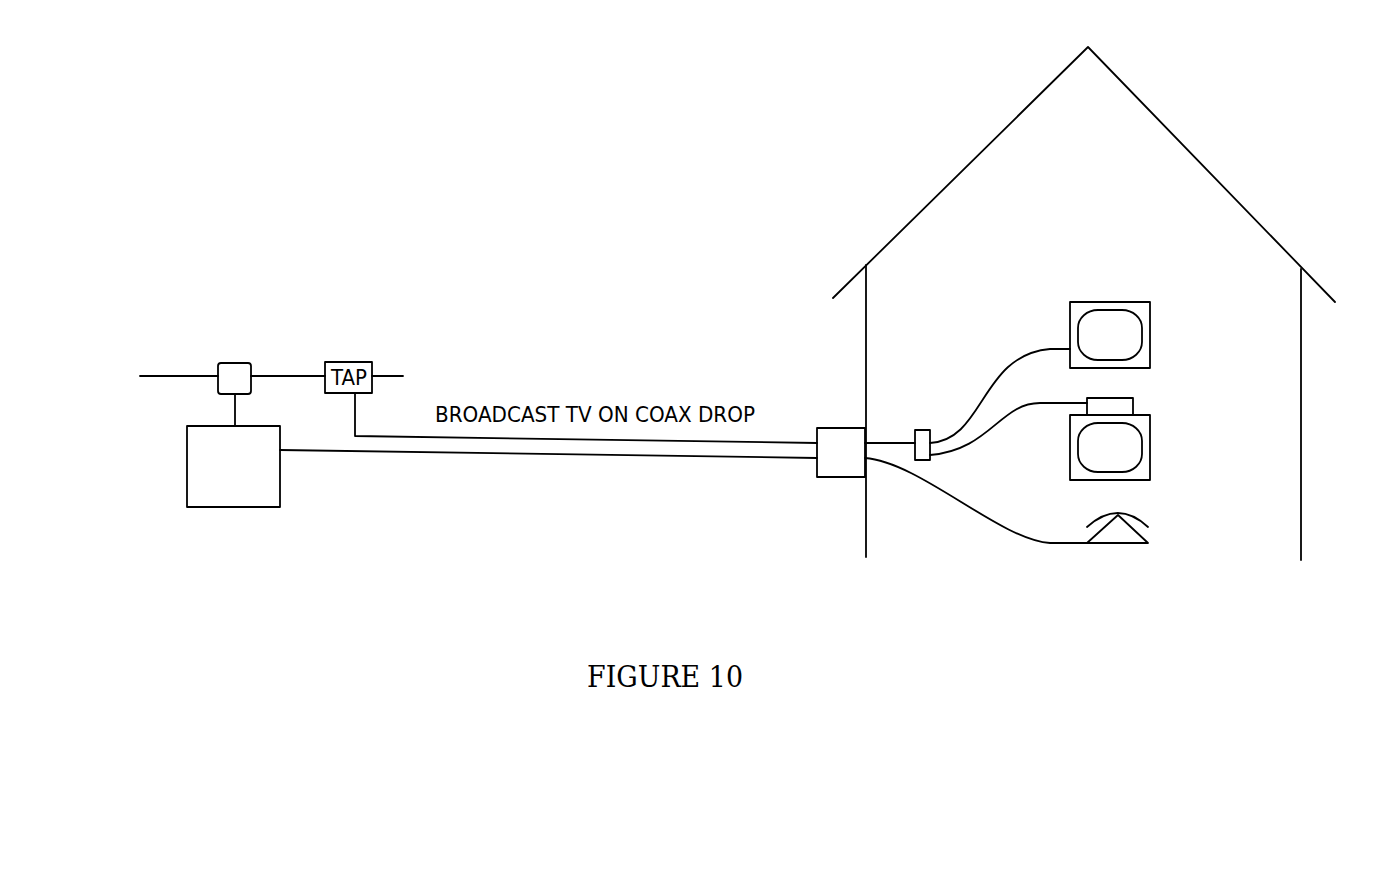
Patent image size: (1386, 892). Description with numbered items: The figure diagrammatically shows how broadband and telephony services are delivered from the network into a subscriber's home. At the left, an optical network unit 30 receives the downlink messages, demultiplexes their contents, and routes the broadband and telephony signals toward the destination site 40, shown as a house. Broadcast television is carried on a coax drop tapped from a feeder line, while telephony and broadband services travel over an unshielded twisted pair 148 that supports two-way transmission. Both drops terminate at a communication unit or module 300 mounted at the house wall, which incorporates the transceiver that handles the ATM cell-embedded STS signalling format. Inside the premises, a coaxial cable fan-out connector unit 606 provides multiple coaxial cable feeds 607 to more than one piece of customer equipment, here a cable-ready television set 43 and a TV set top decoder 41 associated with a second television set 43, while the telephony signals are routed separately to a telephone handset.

The optical network unit 30 is at (280, 507).
The destination site 40 is at (968, 165).
The TV set top decoder 41 is at (1133, 400).
The television set 43 is at (1127, 302).
The unshielded twisted pair 148 is at (762, 460).
The communication unit or module 300 is at (835, 427).
The coaxial cable fan-out connector unit 606 is at (920, 428).
The coaxial cable feeds 607 is at (1024, 360).